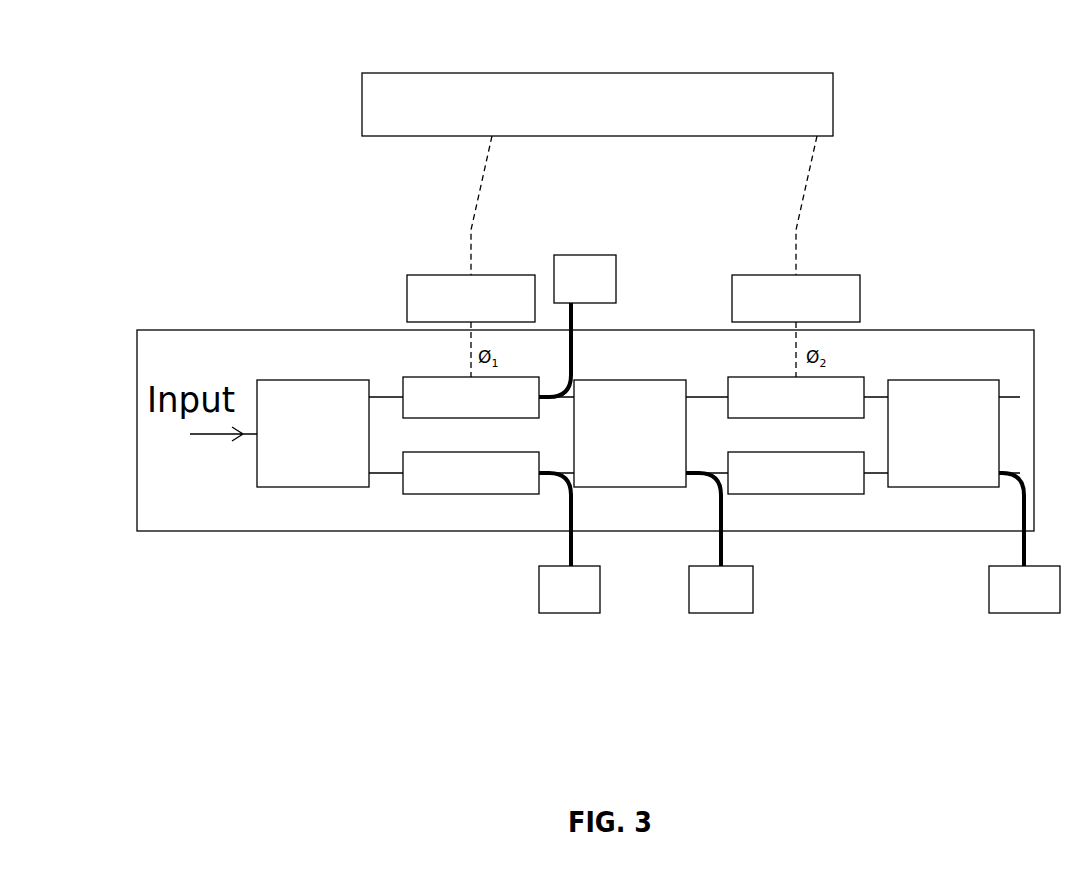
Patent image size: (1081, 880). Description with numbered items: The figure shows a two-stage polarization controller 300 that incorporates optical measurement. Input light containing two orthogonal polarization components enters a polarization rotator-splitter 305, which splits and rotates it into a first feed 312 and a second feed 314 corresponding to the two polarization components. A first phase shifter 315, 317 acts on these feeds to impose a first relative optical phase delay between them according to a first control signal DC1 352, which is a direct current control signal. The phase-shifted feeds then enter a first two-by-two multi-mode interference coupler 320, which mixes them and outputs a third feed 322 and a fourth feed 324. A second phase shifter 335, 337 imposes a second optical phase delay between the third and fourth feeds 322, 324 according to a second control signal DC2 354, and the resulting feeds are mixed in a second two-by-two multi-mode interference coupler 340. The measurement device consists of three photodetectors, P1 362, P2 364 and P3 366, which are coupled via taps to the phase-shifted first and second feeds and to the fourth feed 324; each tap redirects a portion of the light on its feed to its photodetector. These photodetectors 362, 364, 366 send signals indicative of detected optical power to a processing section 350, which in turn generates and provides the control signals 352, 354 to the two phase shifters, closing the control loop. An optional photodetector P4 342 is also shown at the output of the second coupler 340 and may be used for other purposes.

The polarization controller 300 is at (983, 330).
The polarization rotator-splitter 305 is at (282, 380).
The first feed 312 is at (385, 397).
The second feed 314 is at (388, 476).
The first phase shifter 315 is at (418, 377).
The first phase shifter 317 is at (448, 494).
The first 2×2 multi-mode interference coupler 320 is at (629, 380).
The third feed 322 is at (710, 396).
The fourth feed 324 is at (696, 476).
The second phase shifter 335 is at (853, 377).
The second phase shifter 337 is at (842, 494).
The second 2×2 multi-mode interference coupler 340 is at (930, 487).
The optional photodetector P4 342 is at (1042, 613).
The processing section 350 is at (748, 73).
The first control signal DC1 352 is at (437, 275).
The second control signal DC2 354 is at (824, 275).
The photodetector P1 362 is at (578, 255).
The photodetector P2 364 is at (578, 613).
The photodetector P3 366 is at (737, 613).